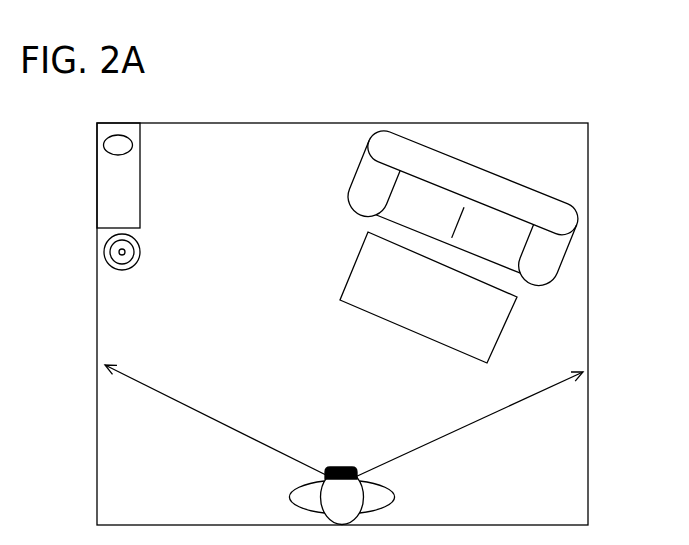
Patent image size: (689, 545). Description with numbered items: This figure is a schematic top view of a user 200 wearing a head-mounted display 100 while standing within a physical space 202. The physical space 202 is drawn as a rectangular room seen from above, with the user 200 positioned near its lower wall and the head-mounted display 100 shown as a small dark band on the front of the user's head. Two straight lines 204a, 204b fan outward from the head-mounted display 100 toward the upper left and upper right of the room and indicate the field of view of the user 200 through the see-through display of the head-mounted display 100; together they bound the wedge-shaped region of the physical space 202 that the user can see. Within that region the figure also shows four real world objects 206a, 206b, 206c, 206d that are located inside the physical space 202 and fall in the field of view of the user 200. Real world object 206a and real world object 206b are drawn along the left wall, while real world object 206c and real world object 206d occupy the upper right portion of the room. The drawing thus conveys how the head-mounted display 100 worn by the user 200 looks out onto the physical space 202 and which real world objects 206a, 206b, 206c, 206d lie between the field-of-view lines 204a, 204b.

The head-mounted display 100 is at (353, 466).
The user 200 is at (290, 492).
The physical space 202 is at (182, 323).
The line 204a is at (216, 422).
The line 204b is at (475, 420).
The real world object 206a is at (134, 266).
The real world object 206b is at (141, 183).
The real world object 206c is at (355, 176).
The real world object 206d is at (370, 316).